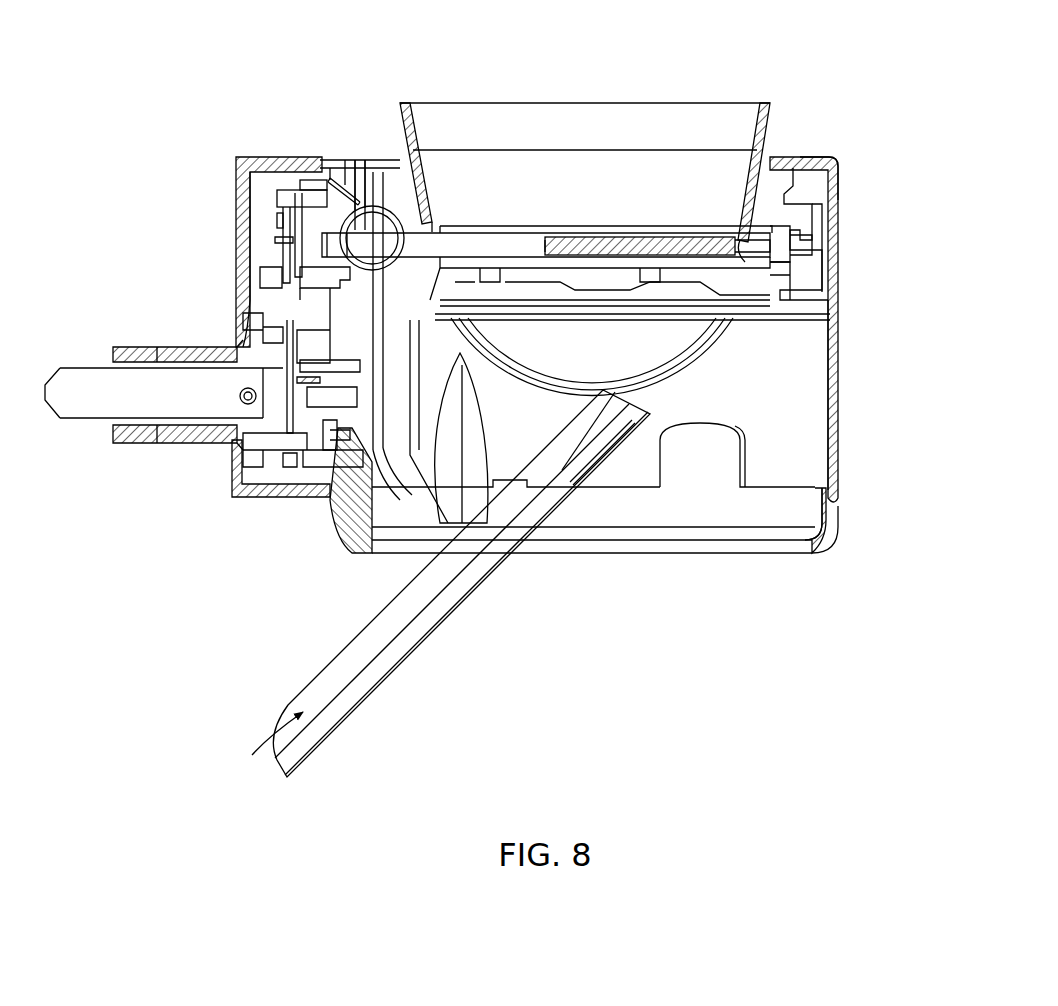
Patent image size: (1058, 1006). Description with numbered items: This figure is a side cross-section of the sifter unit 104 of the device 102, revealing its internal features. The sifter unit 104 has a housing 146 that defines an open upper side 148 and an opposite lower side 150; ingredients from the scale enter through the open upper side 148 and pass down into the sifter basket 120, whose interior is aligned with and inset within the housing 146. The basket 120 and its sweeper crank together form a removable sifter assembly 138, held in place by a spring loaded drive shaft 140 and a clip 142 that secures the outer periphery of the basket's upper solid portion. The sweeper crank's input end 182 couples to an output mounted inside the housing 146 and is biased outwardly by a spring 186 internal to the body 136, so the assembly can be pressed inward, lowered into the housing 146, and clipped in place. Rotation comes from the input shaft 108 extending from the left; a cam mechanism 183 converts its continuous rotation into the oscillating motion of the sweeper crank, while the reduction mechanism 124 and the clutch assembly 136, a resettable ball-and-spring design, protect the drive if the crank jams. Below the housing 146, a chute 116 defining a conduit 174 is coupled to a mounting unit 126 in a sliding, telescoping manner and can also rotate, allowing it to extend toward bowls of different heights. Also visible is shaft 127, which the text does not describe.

The device 102 is at (900, 208).
The sifter unit 104 is at (872, 347).
The input shaft 108 is at (92, 398).
The chute 116 is at (396, 644).
The sifter basket 120 is at (638, 375).
The reduction mechanism 124 is at (289, 205).
The mounting unit 126 is at (572, 488).
The drive shaft 127 is at (478, 218).
The clutch assembly 136 is at (263, 448).
The sifter assembly 138 is at (428, 98).
The spring loaded drive shaft 140 is at (640, 216).
The clip 142 is at (800, 196).
The housing 146 is at (841, 393).
The open upper side 148 is at (836, 162).
The lower side 150 is at (750, 548).
The conduit 174 is at (254, 755).
The input end 182 is at (370, 242).
The cam mechanism 183 is at (298, 318).
The spring 186 is at (586, 240).